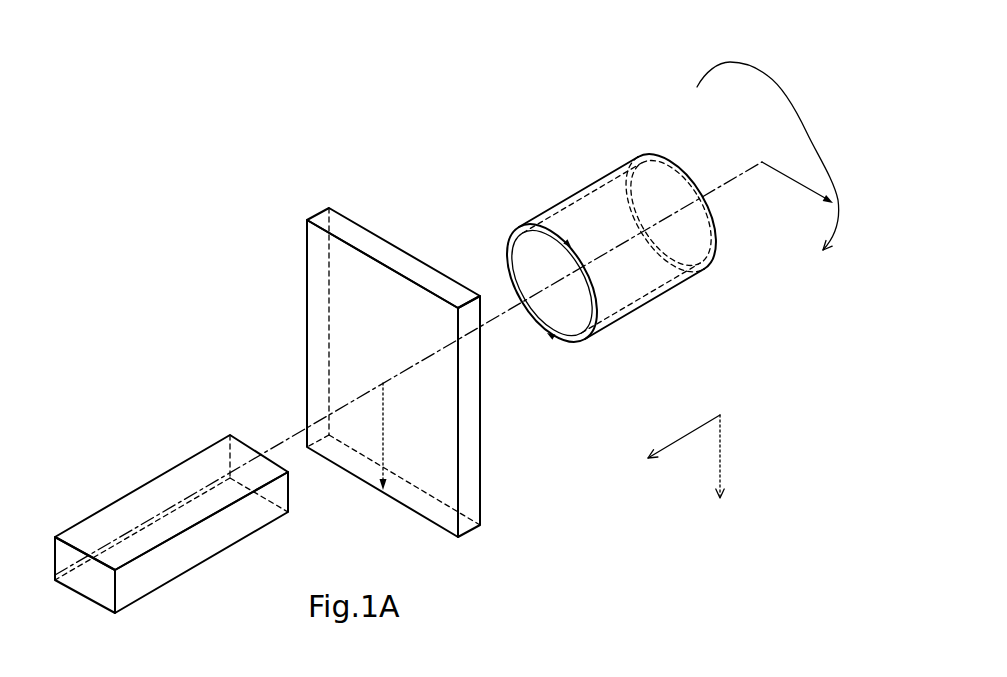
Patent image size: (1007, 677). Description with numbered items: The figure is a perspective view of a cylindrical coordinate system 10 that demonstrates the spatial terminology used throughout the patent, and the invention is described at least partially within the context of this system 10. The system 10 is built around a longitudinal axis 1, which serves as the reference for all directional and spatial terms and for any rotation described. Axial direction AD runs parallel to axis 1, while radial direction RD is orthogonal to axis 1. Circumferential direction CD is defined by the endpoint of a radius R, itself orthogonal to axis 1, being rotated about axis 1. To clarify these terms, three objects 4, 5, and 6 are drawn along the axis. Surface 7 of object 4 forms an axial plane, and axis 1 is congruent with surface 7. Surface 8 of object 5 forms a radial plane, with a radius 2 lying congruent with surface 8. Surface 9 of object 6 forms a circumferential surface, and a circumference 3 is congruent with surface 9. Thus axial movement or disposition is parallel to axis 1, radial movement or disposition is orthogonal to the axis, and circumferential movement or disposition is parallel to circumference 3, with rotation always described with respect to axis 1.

The longitudinal axis 1 is at (580, 247).
The radius 2 is at (385, 427).
The circumference 3 is at (507, 252).
The object 4 is at (171, 551).
The object 5 is at (396, 393).
The object 6 is at (643, 320).
The surface 7 is at (133, 508).
The surface 8 is at (322, 333).
The surface 9 is at (580, 192).
The cylindrical coordinate system 10 is at (255, 249).
The circumferential direction CD is at (768, 76).
The radius R is at (800, 187).
The axial direction AD is at (685, 433).
The radial direction RD is at (720, 452).